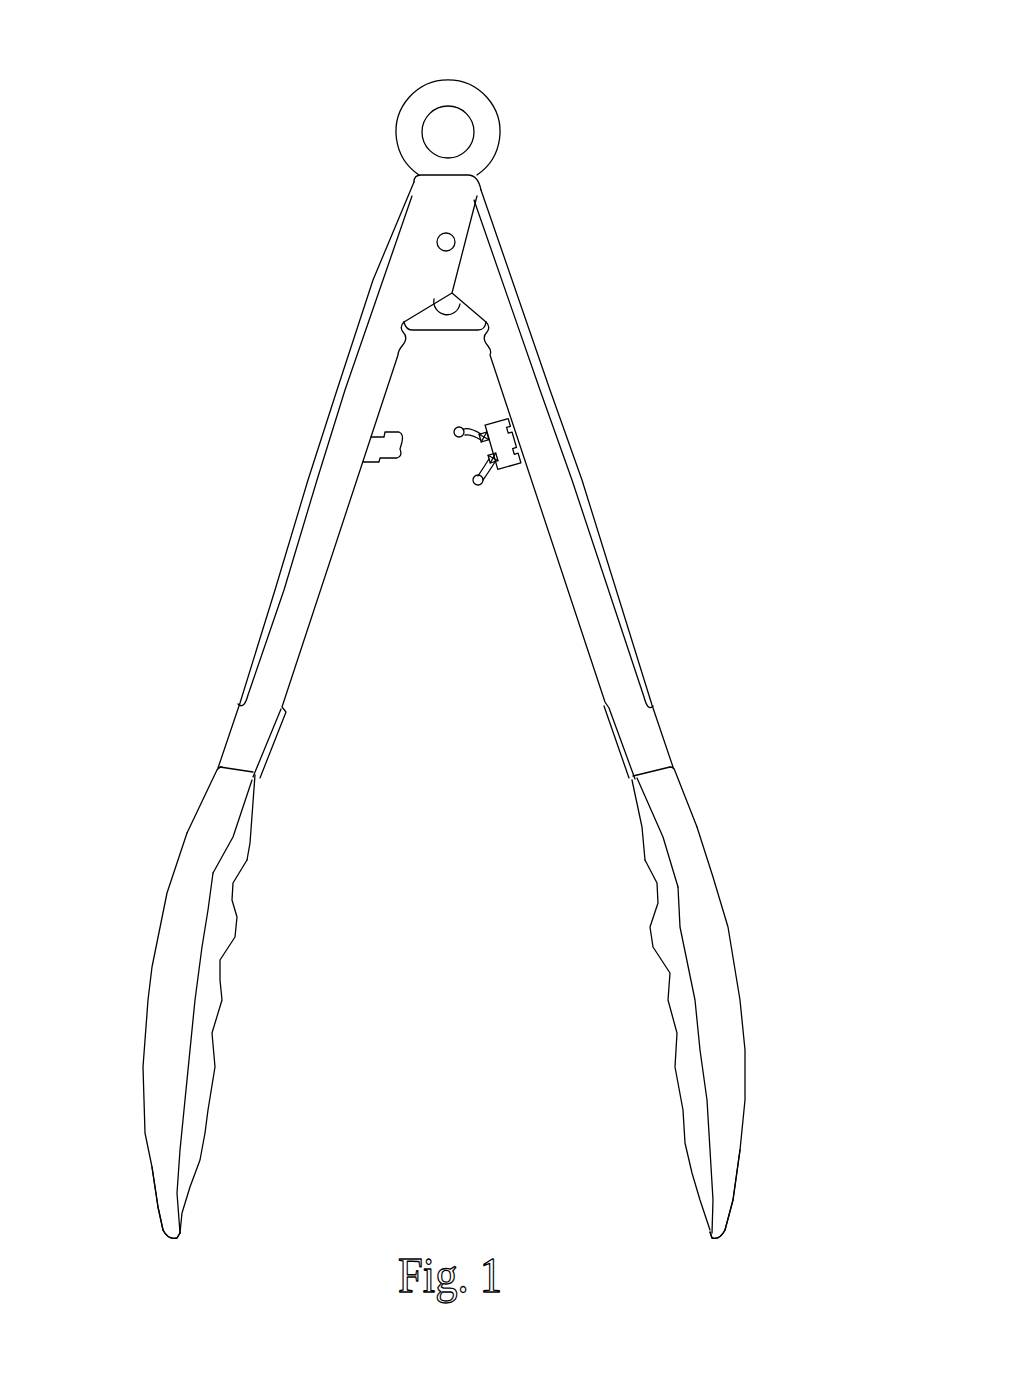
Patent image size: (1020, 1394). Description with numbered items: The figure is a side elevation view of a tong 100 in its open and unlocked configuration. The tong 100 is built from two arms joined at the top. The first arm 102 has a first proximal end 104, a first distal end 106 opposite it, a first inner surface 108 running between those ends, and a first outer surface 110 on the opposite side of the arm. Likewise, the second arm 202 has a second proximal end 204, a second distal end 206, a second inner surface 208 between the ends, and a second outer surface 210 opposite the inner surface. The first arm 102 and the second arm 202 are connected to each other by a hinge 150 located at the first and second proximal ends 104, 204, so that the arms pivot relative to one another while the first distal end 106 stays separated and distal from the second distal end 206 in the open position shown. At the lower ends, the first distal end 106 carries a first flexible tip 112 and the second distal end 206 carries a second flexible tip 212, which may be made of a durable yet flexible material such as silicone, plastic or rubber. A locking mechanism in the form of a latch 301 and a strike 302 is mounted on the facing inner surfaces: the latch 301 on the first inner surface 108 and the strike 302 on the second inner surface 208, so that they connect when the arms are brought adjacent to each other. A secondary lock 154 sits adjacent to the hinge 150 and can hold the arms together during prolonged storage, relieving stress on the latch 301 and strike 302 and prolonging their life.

The tong 100 is at (722, 133).
The first arm 102 is at (552, 430).
The first proximal end 104 is at (527, 197).
The first distal end 106 is at (741, 1239).
The first inner surface 108 is at (585, 702).
The first outer surface 110 is at (708, 580).
The first flexible tip 112 is at (727, 1204).
The hinge 150 is at (456, 241).
The secondary lock 154 is at (480, 90).
The second arm 202 is at (305, 538).
The second proximal end 204 is at (318, 721).
The second distal end 206 is at (157, 1244).
The second inner surface 208 is at (308, 693).
The second outer surface 210 is at (190, 670).
The second flexible tip 212 is at (160, 1217).
The latch 301 is at (503, 470).
The strike 302 is at (393, 463).